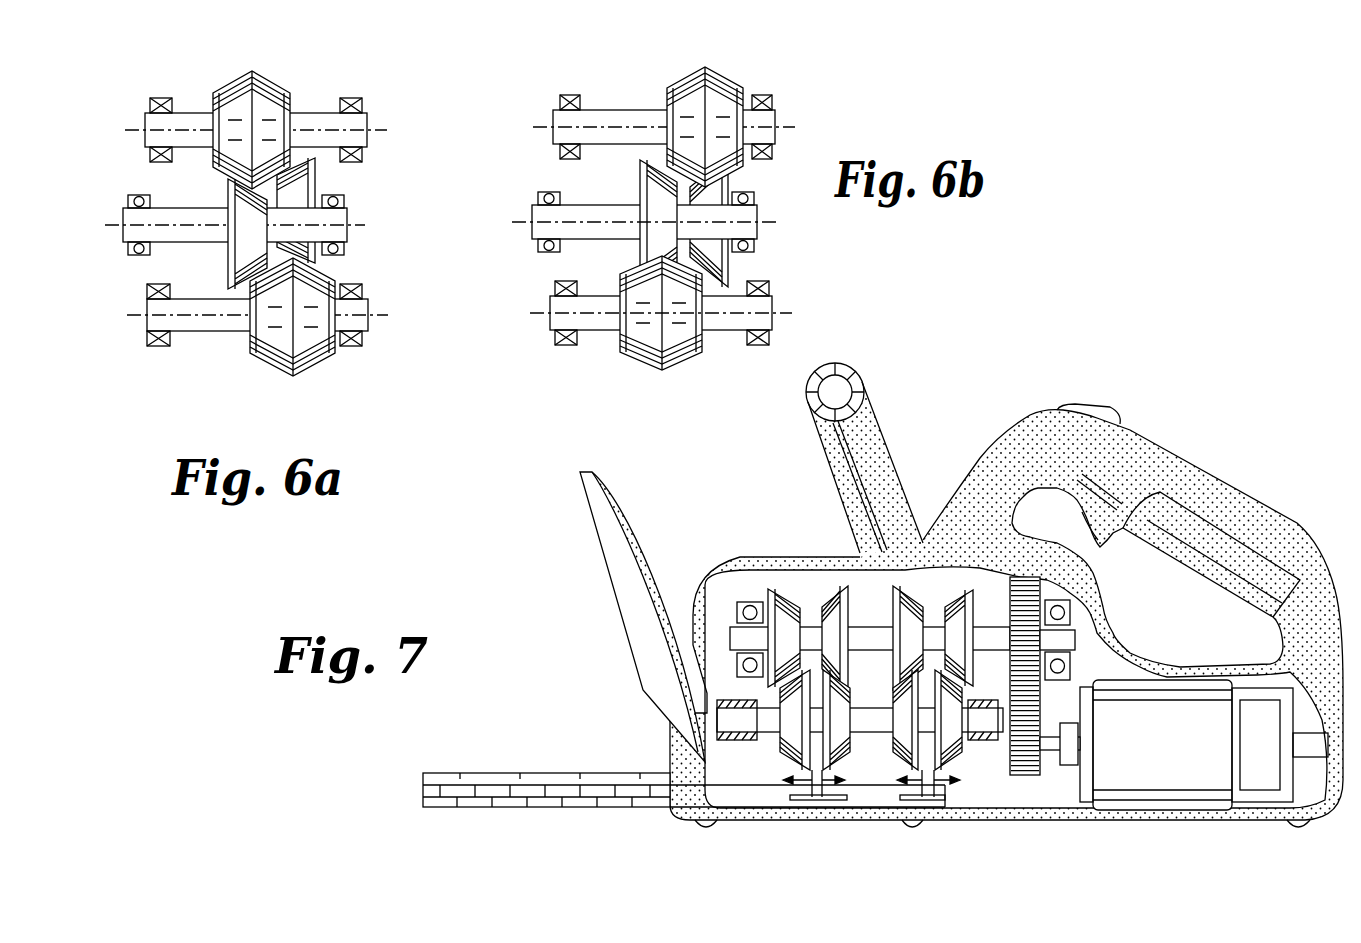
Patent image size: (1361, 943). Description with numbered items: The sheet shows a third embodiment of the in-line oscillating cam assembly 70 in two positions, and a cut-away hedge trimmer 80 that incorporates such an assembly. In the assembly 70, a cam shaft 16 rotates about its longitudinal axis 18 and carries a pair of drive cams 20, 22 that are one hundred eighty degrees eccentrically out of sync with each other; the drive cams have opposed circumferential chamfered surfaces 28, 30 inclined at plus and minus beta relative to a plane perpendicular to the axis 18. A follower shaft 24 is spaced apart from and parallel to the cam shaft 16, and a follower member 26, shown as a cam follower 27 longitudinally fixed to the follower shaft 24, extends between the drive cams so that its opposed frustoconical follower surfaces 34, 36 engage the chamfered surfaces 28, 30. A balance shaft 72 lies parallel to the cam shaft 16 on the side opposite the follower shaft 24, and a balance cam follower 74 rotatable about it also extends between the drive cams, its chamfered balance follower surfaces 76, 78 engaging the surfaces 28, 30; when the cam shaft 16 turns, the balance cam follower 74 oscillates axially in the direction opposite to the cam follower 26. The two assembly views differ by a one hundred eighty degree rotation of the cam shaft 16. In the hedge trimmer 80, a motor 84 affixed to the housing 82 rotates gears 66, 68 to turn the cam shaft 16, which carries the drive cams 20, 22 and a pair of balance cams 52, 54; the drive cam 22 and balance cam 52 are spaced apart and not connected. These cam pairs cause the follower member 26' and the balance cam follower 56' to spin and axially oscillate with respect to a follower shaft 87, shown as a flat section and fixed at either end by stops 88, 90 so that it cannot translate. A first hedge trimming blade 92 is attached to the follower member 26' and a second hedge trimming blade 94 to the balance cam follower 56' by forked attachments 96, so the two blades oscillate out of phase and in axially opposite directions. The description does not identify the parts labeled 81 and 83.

In FIG. 6A, the cam shaft 16 is at (123, 215).
In FIG. 6B, the cam shaft 16 is at (532, 232).
In FIG. 6A, the longitudinal axis 18 is at (120, 232).
In FIG. 6A, the drive cam 20 is at (228, 200).
In FIG. 6B, the drive cam 20 is at (640, 252).
In FIG. 7, the drive cam 20 is at (772, 590).
In FIG. 6A, the drive cam 22 is at (318, 208).
In FIG. 6B, the drive cam 22 is at (730, 268).
In FIG. 7, the drive cam 22 is at (838, 588).
In FIG. 6A, the follower shaft 24 is at (140, 325).
In FIG. 6B, the follower shaft 24 is at (552, 320).
In FIG. 6A, the follower member 26 is at (316, 338).
In FIG. 6B, the follower member 26 is at (677, 333).
In FIG. 7, the follower member 26' is at (769, 783).
In FIG. 6A, the cam follower 27 is at (122, 322).
In FIG. 6A, the chamfered surface 28 is at (200, 147).
In FIG. 6B, the chamfered surface 28 is at (650, 145).
In FIG. 6A, the chamfered surface 30 is at (300, 152).
In FIG. 6B, the chamfered surface 30 is at (740, 172).
In FIG. 7, the follower surface 34 is at (814, 782).
In FIG. 7, the follower surface 36 is at (930, 782).
In FIG. 7, the balance cam 52 is at (898, 588).
In FIG. 7, the balance cam 54 is at (957, 592).
In FIG. 7, the balance cam follower 56' is at (872, 798).
In FIG. 7, the gear 66 is at (1062, 766).
In FIG. 7, the gear 68 is at (1015, 578).
In FIG. 6A, the in-line oscillating cam assembly 70 is at (254, 106).
In FIG. 6B, the in-line oscillating cam assembly 70 is at (739, 105).
In FIG. 6A, the balance shaft 72 is at (367, 125).
In FIG. 6B, the balance shaft 72 is at (553, 115).
In FIG. 6A, the balance cam follower 74 is at (243, 76).
In FIG. 6B, the balance cam follower 74 is at (700, 70).
In FIG. 6A, the chamfered balance follower surface 76 is at (220, 95).
In FIG. 6B, the chamfered balance follower surface 76 is at (670, 88).
In FIG. 6A, the chamfered balance follower surface 78 is at (292, 85).
In FIG. 6B, the chamfered balance follower surface 78 is at (745, 85).
In FIG. 7, the hedge trimmer 80 is at (1006, 564).
In FIG. 7, the transmission 81 is at (763, 594).
In FIG. 7, the housing 82 is at (1155, 440).
In FIG. 7, the switch button 83 is at (1110, 408).
In FIG. 7, the motor 84 is at (1157, 787).
In FIG. 7, the follower shaft 87 is at (964, 760).
In FIG. 7, the stop 88 is at (708, 738).
In FIG. 7, the stop 90 is at (1000, 742).
In FIG. 7, the first hedge trimming blade 92 is at (765, 800).
In FIG. 7, the second hedge trimming blade 94 is at (905, 801).
In FIG. 7, the forked attachment 96 is at (845, 772).